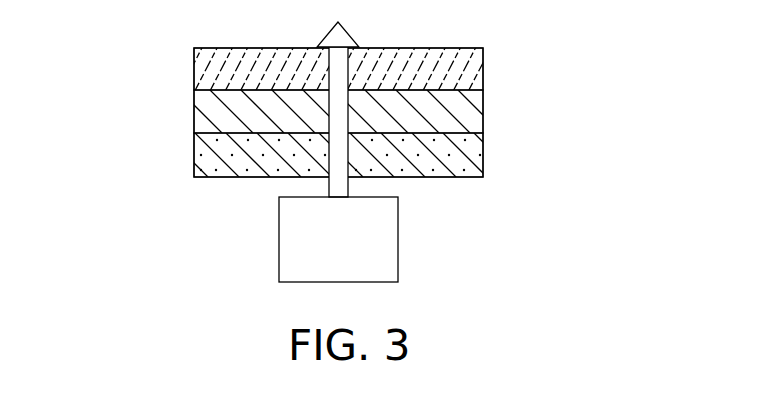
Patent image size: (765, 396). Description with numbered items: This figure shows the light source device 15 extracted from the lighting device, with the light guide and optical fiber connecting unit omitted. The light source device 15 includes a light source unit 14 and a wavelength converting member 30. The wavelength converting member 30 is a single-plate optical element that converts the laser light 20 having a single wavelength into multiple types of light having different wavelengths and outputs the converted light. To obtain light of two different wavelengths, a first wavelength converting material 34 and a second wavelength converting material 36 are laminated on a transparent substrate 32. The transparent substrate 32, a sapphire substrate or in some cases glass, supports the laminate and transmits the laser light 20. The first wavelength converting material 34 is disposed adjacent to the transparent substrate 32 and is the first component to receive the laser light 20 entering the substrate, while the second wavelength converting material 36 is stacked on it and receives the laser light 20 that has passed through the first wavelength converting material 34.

The light source unit 14 is at (279, 250).
The light source device 15 is at (525, 56).
The laser light 20 is at (329, 183).
The wavelength converting member 30 is at (140, 50).
The transparent substrate 32 is at (200, 152).
The first wavelength converting material 34 is at (200, 109).
The second wavelength converting material 36 is at (200, 66).